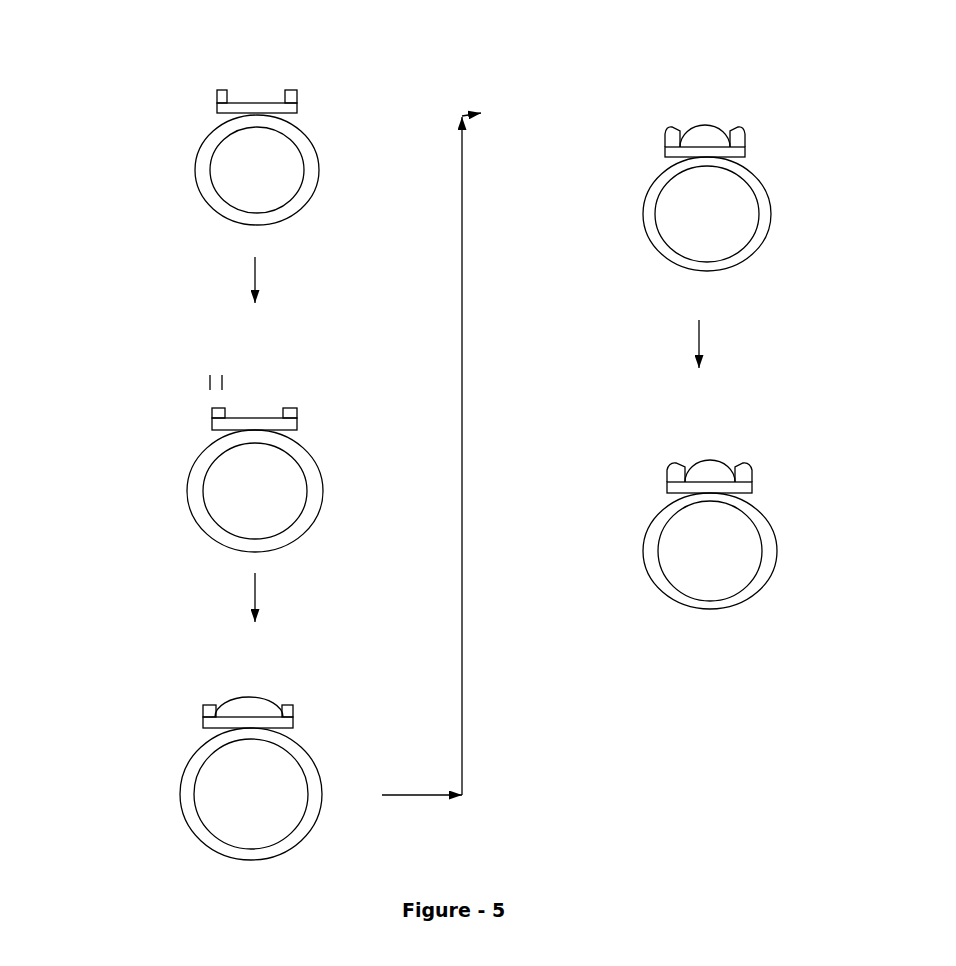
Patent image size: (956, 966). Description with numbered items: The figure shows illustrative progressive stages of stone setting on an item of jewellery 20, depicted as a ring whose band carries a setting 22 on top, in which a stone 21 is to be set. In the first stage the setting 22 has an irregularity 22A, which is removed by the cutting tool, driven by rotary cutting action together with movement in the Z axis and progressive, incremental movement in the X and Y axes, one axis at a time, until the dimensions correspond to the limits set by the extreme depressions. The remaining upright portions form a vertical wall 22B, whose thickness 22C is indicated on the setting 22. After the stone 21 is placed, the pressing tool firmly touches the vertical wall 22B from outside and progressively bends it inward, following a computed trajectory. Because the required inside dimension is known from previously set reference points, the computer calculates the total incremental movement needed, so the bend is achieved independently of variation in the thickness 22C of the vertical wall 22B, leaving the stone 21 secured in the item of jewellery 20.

The item of jewellery 20 is at (295, 98).
The stone 21 is at (258, 695).
The setting plate 22 is at (250, 98).
The irregularity 22A is at (212, 69).
The vertical wall 22B is at (208, 415).
The thickness 22C is at (245, 383).